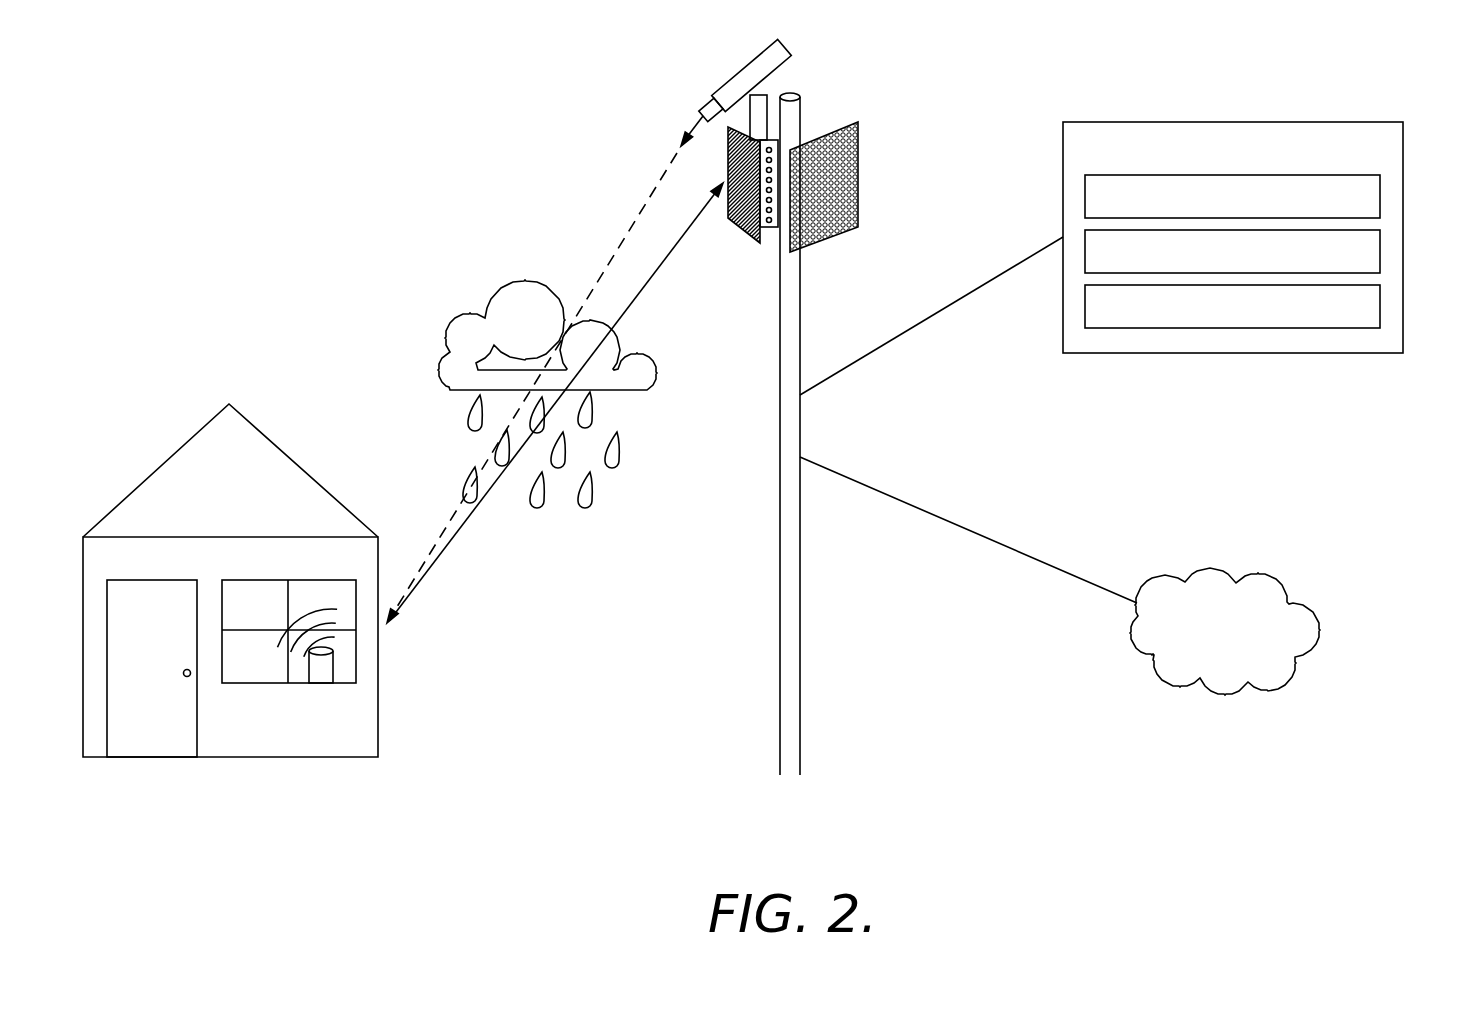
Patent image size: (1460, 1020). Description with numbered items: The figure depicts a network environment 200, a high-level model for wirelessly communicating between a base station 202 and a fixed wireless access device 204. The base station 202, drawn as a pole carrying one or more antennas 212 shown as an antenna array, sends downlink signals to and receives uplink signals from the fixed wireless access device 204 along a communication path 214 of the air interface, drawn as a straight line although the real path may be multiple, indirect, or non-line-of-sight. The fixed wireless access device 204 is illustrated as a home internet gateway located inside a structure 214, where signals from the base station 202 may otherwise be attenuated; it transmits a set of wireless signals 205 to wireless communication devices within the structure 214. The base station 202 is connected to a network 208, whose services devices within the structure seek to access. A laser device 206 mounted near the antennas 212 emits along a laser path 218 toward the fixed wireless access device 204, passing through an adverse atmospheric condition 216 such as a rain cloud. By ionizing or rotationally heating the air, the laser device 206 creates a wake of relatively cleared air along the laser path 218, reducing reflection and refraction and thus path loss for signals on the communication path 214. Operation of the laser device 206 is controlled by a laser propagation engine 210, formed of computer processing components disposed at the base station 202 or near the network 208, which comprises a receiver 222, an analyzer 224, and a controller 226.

The network environment 200 is at (160, 78).
The base station 202 is at (804, 402).
The fixed wireless access device 204 is at (323, 685).
The set of wireless signals 205 is at (327, 593).
The laser device 206 is at (748, 62).
The network 208 is at (1258, 571).
The laser propagation engine 210 is at (1127, 240).
The antennas 212 is at (741, 227).
The communication path 214 is at (293, 460).
The adverse atmospheric condition 216 is at (517, 282).
The laser path 218 is at (629, 232).
The receiver 222 is at (1380, 197).
The analyzer 224 is at (1380, 253).
The controller 226 is at (1380, 308).